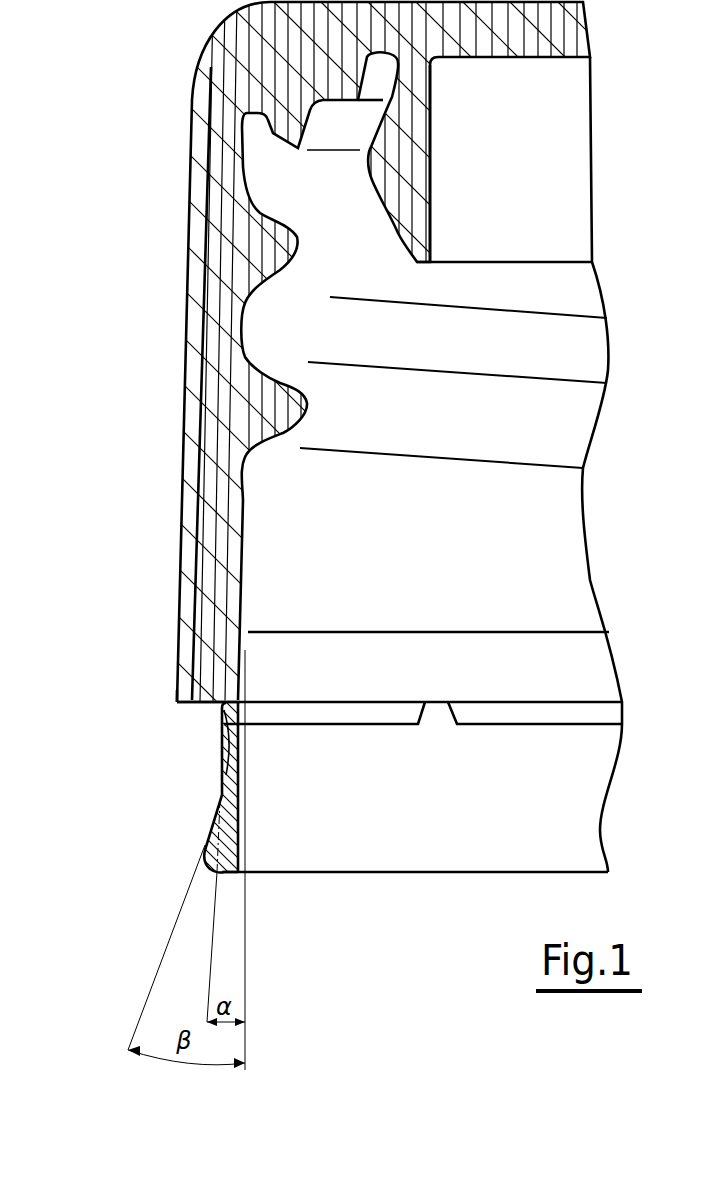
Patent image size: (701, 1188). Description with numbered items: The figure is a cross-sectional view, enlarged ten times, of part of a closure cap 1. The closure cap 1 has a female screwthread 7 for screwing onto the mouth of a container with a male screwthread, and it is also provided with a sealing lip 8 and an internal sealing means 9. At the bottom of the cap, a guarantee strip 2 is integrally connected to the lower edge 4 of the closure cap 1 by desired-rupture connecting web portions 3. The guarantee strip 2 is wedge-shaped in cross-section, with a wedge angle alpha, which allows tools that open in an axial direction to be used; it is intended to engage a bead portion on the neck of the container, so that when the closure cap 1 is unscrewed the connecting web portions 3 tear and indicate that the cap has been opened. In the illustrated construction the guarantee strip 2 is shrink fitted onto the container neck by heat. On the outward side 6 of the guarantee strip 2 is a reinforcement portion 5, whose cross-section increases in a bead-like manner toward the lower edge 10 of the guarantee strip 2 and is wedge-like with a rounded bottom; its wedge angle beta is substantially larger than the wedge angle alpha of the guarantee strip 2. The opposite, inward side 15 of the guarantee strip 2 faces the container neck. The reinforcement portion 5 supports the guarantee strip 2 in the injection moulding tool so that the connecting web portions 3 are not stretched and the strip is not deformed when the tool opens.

The closure cap 1 is at (163, 33).
The guarantee strip 2 is at (228, 813).
The connecting web portions 3 is at (222, 708).
The lower edge 4 is at (203, 703).
The reinforcement portion 5 is at (203, 850).
The outward side 6 is at (212, 828).
The female screwthread 7 is at (297, 267).
The sealing lip 8 is at (307, 150).
The internal sealing means 9 is at (415, 197).
The lower edge of the guarantee strip 10 is at (417, 875).
The inward side 15 is at (242, 795).